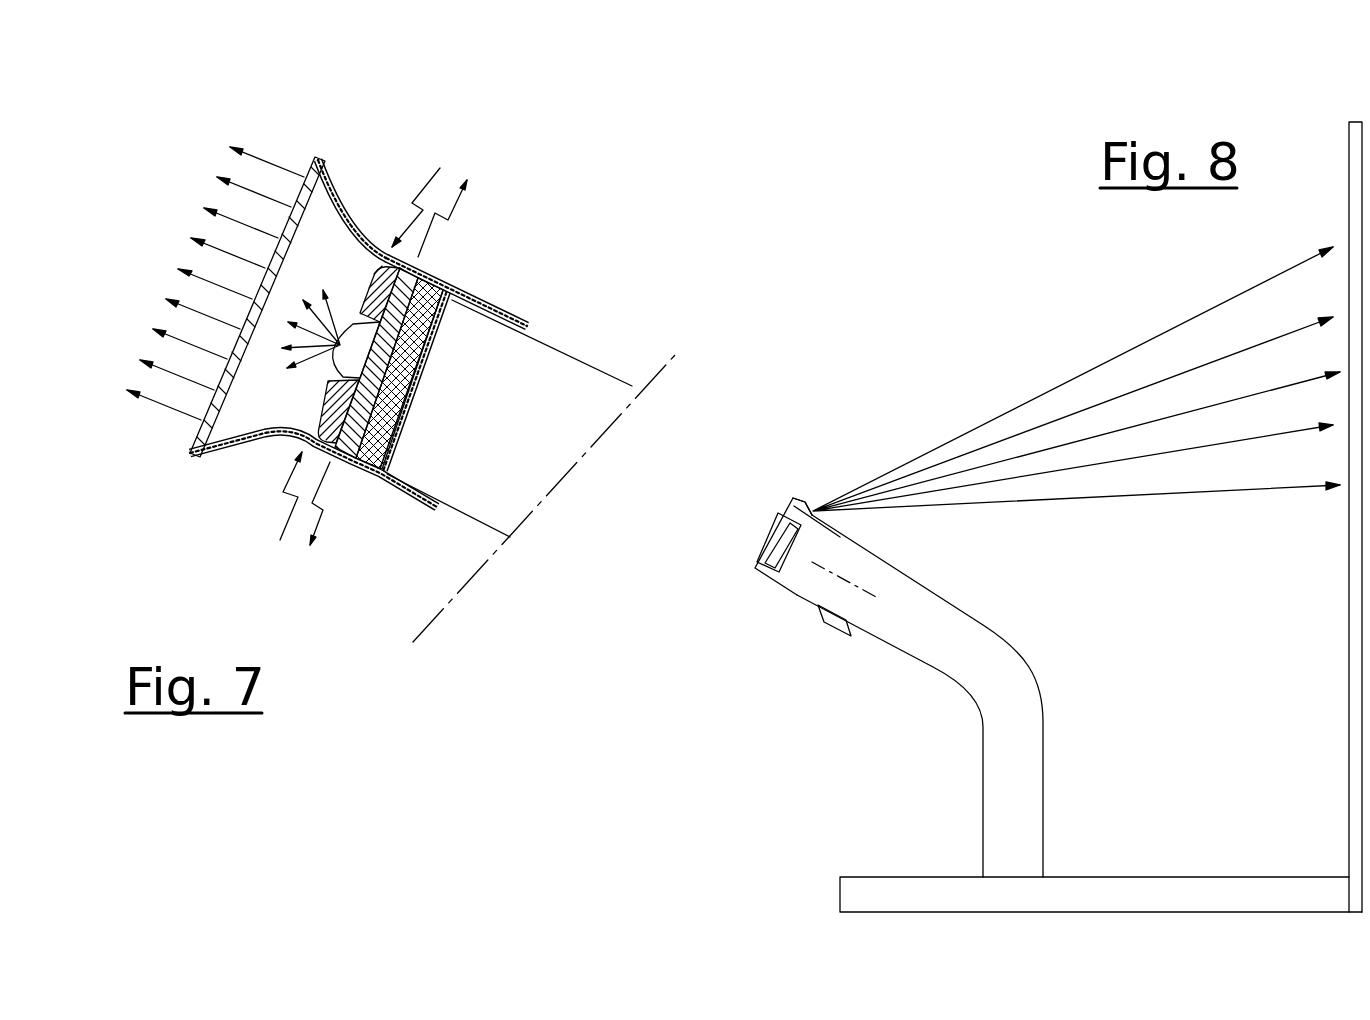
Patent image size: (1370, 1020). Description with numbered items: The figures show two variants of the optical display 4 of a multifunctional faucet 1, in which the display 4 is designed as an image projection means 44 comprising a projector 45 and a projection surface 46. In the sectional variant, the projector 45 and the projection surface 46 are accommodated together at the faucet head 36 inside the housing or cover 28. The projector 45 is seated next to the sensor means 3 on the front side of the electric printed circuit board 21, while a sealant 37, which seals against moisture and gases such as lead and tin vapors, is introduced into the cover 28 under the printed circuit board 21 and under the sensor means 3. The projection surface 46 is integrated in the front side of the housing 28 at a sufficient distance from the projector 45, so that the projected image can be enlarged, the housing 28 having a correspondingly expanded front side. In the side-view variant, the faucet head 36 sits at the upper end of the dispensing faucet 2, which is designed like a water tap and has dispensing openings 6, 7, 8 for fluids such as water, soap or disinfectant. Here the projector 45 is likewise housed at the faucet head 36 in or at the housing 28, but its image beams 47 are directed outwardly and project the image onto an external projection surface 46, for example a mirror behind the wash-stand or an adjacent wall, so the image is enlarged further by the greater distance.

In FIG. 8, the multifunctional faucet 1 is at (868, 742).
In FIG. 7, the dispensing faucet 2 is at (548, 440).
In FIG. 8, the dispensing faucet 2 is at (933, 622).
In FIG. 7, the sensor means 3 is at (387, 262).
In FIG. 8, the sensor means 3 is at (770, 551).
In FIG. 7, the display 4 is at (457, 301).
In FIG. 8, the display 4 is at (806, 445).
In FIG. 7, the image projection means 44 is at (287, 156).
In FIG. 8, the image projection means 44 is at (922, 432).
In FIG. 8, the dispensing opening 6 is at (817, 653).
In FIG. 8, the dispensing opening 7 is at (817, 653).
In FIG. 8, the dispensing opening 8 is at (830, 618).
In FIG. 7, the printed circuit board 21 is at (430, 274).
In FIG. 7, the cover 28 is at (513, 316).
In FIG. 8, the cover 28 is at (778, 513).
In FIG. 7, the faucet head 36 is at (573, 332).
In FIG. 8, the faucet head 36 is at (778, 594).
In FIG. 7, the sealant 37 is at (380, 440).
In FIG. 7, the projector 45 is at (340, 358).
In FIG. 8, the projector 45 is at (797, 498).
In FIG. 7, the projection surface 46 is at (198, 250).
In FIG. 8, the projection surface 46 is at (1346, 545).
In FIG. 8, the image beams 47 is at (1072, 378).